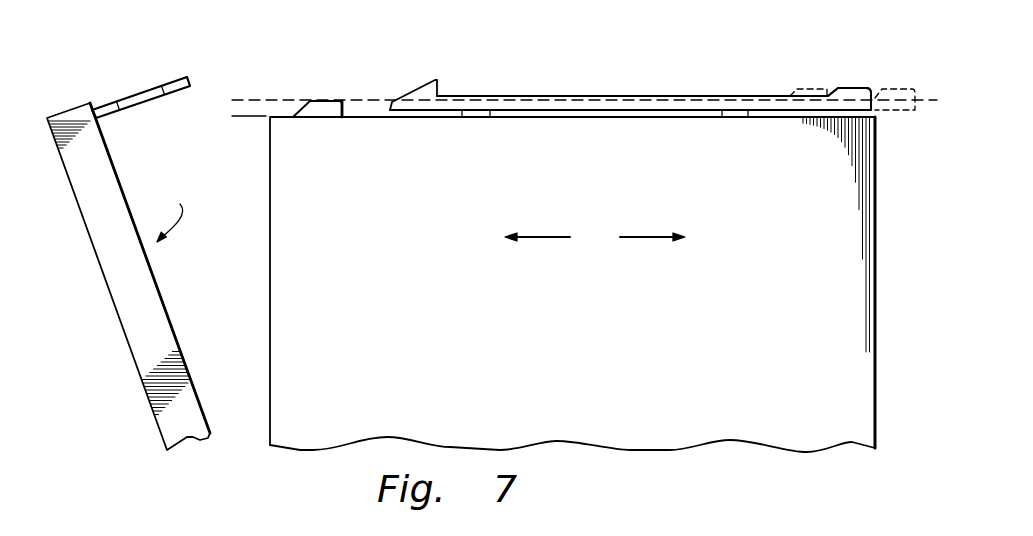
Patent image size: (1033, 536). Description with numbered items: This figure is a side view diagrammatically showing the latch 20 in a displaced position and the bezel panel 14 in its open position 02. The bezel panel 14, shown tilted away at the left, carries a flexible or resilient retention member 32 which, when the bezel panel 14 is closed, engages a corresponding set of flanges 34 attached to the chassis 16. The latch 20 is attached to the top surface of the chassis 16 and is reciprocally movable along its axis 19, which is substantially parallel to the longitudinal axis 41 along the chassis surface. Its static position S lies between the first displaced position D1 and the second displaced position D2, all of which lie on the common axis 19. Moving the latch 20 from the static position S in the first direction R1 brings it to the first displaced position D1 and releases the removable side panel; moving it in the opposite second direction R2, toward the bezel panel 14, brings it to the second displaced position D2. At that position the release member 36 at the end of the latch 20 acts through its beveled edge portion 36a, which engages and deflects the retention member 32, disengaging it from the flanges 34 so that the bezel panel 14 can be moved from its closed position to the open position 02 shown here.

The bezel panel 14 is at (108, 297).
The retention member 32 is at (177, 78).
The open position 02 is at (183, 215).
The chassis 16 is at (277, 233).
The common axis 19 is at (258, 100).
The longitudinal axis 41 is at (243, 118).
The flanges 34 is at (328, 100).
The release member 36 is at (427, 93).
The beveled edge portion 36a is at (405, 108).
The latch 20 is at (626, 97).
The second displaced position D2 is at (808, 78).
The static position S is at (859, 78).
The first displaced position D1 is at (900, 78).
The first direction R1 is at (647, 235).
The second direction R2 is at (550, 235).